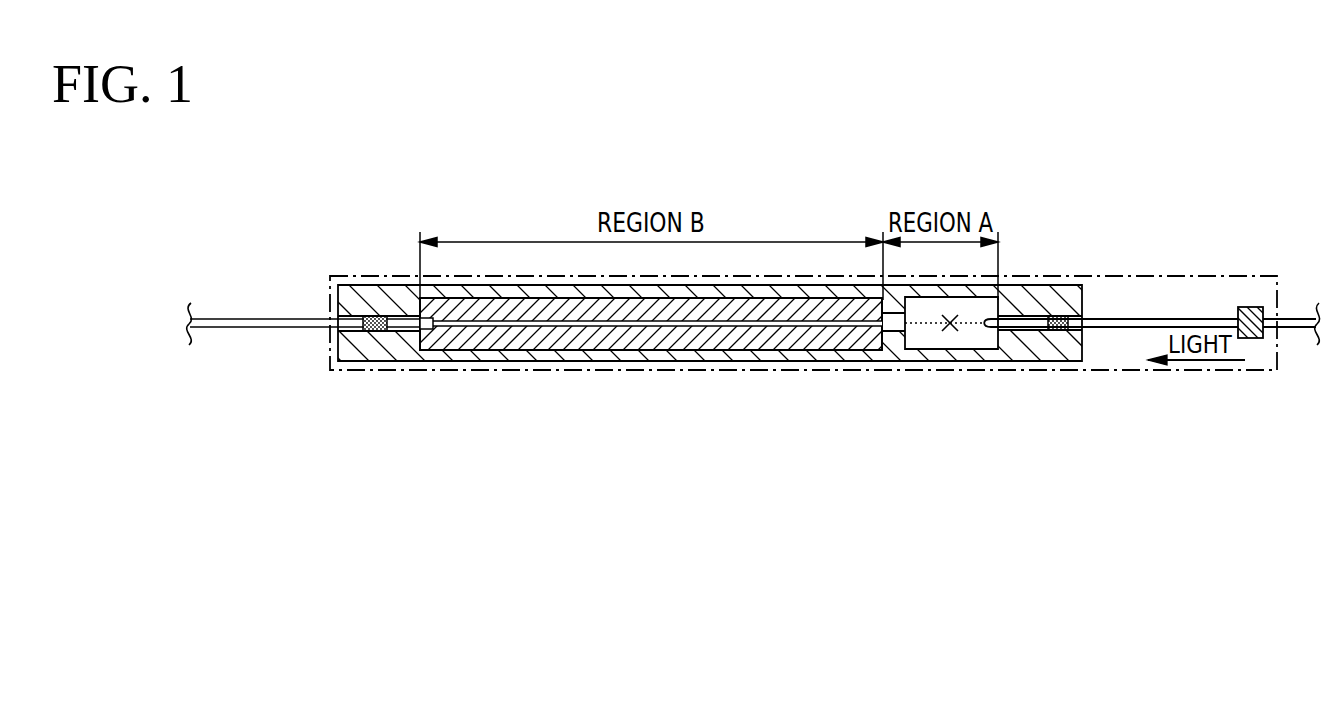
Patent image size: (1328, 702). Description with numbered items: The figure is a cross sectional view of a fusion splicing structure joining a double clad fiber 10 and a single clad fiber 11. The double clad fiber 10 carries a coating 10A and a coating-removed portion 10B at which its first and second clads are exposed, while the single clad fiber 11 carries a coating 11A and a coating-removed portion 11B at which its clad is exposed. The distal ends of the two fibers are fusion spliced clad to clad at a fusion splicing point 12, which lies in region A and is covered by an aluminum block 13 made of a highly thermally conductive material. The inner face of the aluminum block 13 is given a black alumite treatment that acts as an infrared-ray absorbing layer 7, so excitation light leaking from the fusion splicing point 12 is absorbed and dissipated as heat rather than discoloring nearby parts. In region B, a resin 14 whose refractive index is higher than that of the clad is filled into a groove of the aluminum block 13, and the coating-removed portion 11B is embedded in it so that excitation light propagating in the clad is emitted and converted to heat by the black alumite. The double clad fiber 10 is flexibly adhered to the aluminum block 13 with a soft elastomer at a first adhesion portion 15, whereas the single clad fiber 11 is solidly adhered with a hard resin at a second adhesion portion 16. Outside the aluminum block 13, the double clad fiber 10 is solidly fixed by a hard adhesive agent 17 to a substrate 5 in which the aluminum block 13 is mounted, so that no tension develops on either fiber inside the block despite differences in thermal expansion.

The substrate 5 is at (635, 371).
The infrared-ray absorbing layer 7 is at (800, 333).
The double clad fiber 10 is at (1197, 319).
The coating 10A is at (1126, 319).
The coating-removed portion 10B is at (981, 325).
The single clad fiber 11 is at (225, 318).
The coating 11A is at (302, 318).
The coating-removed portion 11B is at (506, 328).
The fusion splicing point 12 is at (953, 330).
The aluminum block 13 is at (406, 352).
The resin 14 is at (728, 335).
The first adhesion portion 15 is at (1062, 316).
The second adhesion portion 16 is at (378, 316).
The hard adhesive agent 17 is at (1252, 307).